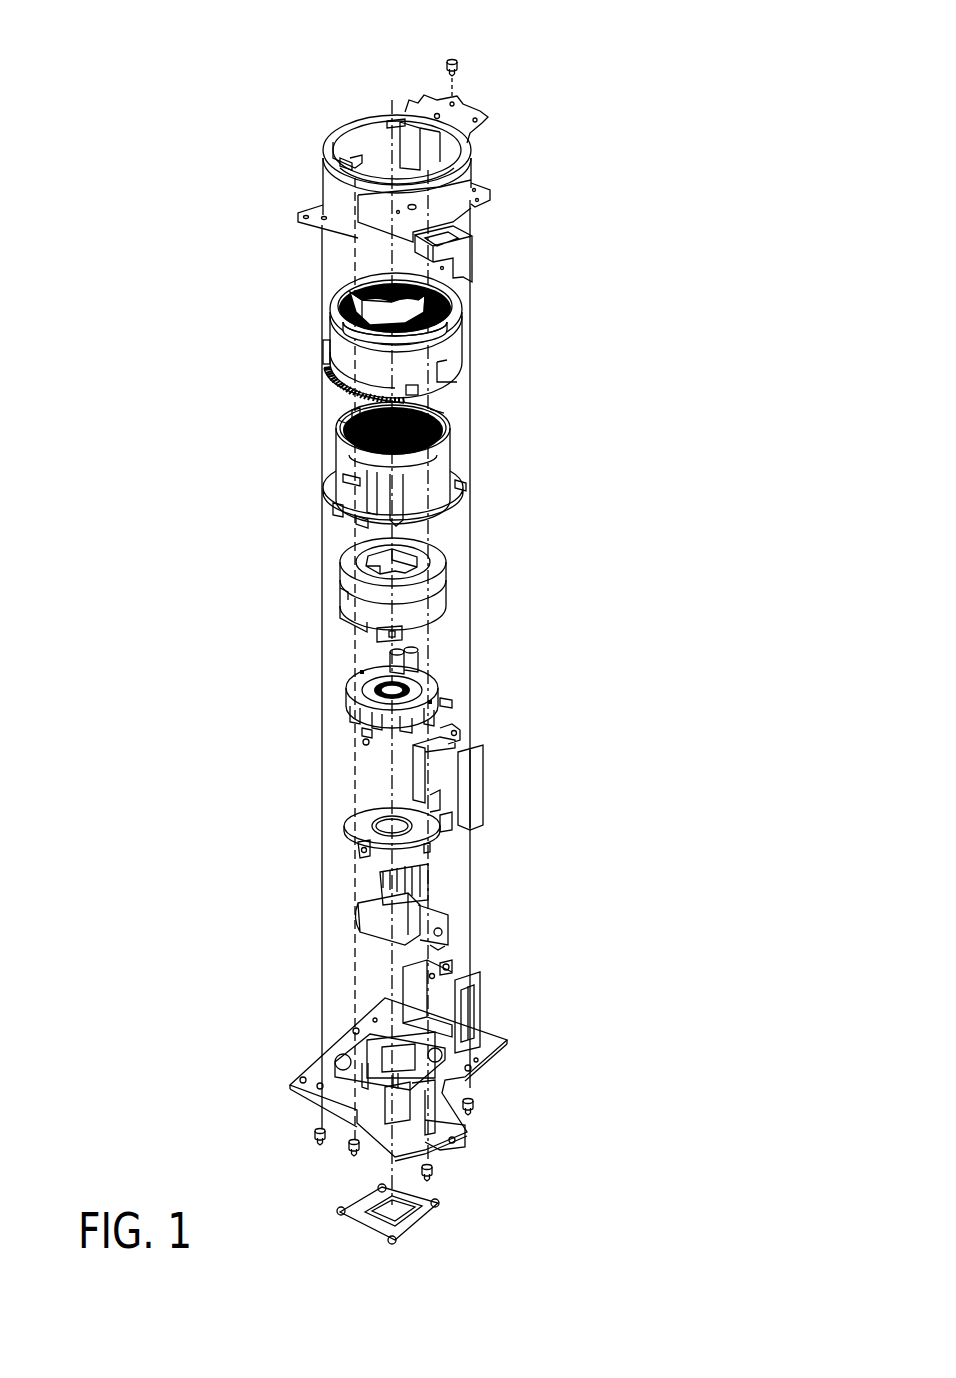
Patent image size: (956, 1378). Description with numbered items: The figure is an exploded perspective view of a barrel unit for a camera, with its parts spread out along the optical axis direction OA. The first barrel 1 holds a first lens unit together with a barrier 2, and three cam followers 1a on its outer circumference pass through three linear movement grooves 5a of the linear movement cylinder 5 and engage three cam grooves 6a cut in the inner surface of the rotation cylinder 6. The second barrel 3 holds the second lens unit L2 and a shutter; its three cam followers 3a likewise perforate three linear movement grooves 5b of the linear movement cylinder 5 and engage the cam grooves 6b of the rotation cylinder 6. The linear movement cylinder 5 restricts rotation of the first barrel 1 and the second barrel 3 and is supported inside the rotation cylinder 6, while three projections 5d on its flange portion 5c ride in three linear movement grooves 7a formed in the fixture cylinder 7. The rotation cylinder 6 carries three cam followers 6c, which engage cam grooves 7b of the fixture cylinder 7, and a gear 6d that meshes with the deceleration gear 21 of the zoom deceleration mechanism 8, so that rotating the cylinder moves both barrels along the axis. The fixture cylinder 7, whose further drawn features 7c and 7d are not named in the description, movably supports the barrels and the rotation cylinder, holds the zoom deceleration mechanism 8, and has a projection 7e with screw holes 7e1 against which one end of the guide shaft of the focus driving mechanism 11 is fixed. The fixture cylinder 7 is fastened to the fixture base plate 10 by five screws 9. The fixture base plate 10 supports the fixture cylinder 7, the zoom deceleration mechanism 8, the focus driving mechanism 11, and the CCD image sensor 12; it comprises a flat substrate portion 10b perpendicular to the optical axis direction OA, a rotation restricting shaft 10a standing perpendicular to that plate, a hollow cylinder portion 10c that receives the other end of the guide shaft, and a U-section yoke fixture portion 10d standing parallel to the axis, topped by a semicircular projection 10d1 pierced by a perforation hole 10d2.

The first barrel 1 is at (447, 595).
The cam followers 1a is at (340, 590).
The barrier 2 is at (417, 558).
The second barrel 3 is at (433, 673).
The cam followers 3a is at (443, 700).
The linear movement cylinder 5 is at (452, 452).
The linear movement grooves 5a is at (438, 413).
The linear movement grooves 5b is at (355, 412).
The flange portion 5c is at (337, 495).
The projections 5d is at (460, 483).
The rotation cylinder 6 is at (457, 330).
The cam grooves 6a is at (363, 292).
The cam grooves 6b is at (437, 293).
The cam followers 6c is at (322, 342).
The gear 6d is at (330, 388).
The fixture cylinder 7 is at (475, 123).
The linear movement grooves 7a is at (398, 147).
The cam grooves 7b is at (405, 118).
The guide groove 7c is at (433, 152).
The mounting portion 7d is at (458, 205).
The projection 7e is at (422, 102).
The screw holes 7e1 is at (437, 113).
The zoom deceleration mechanism 8 is at (443, 900).
The screws 9 is at (458, 68).
The fixture base plate 10 is at (502, 1030).
The rotation restricting shaft 10a is at (367, 1093).
The substrate portion 10b is at (490, 1055).
The hollow cylinder portion 10c is at (487, 1010).
The yoke fixture portion 10d is at (477, 975).
The semicircular projection 10d1 is at (450, 968).
The perforation hole 10d2 is at (450, 965).
The focus driving mechanism 11 is at (345, 820).
The CCD image sensor 12 is at (422, 1227).
The deceleration gear 21 is at (378, 885).
The second lens unit L2 is at (340, 690).
The optical axis direction OA is at (392, 768).